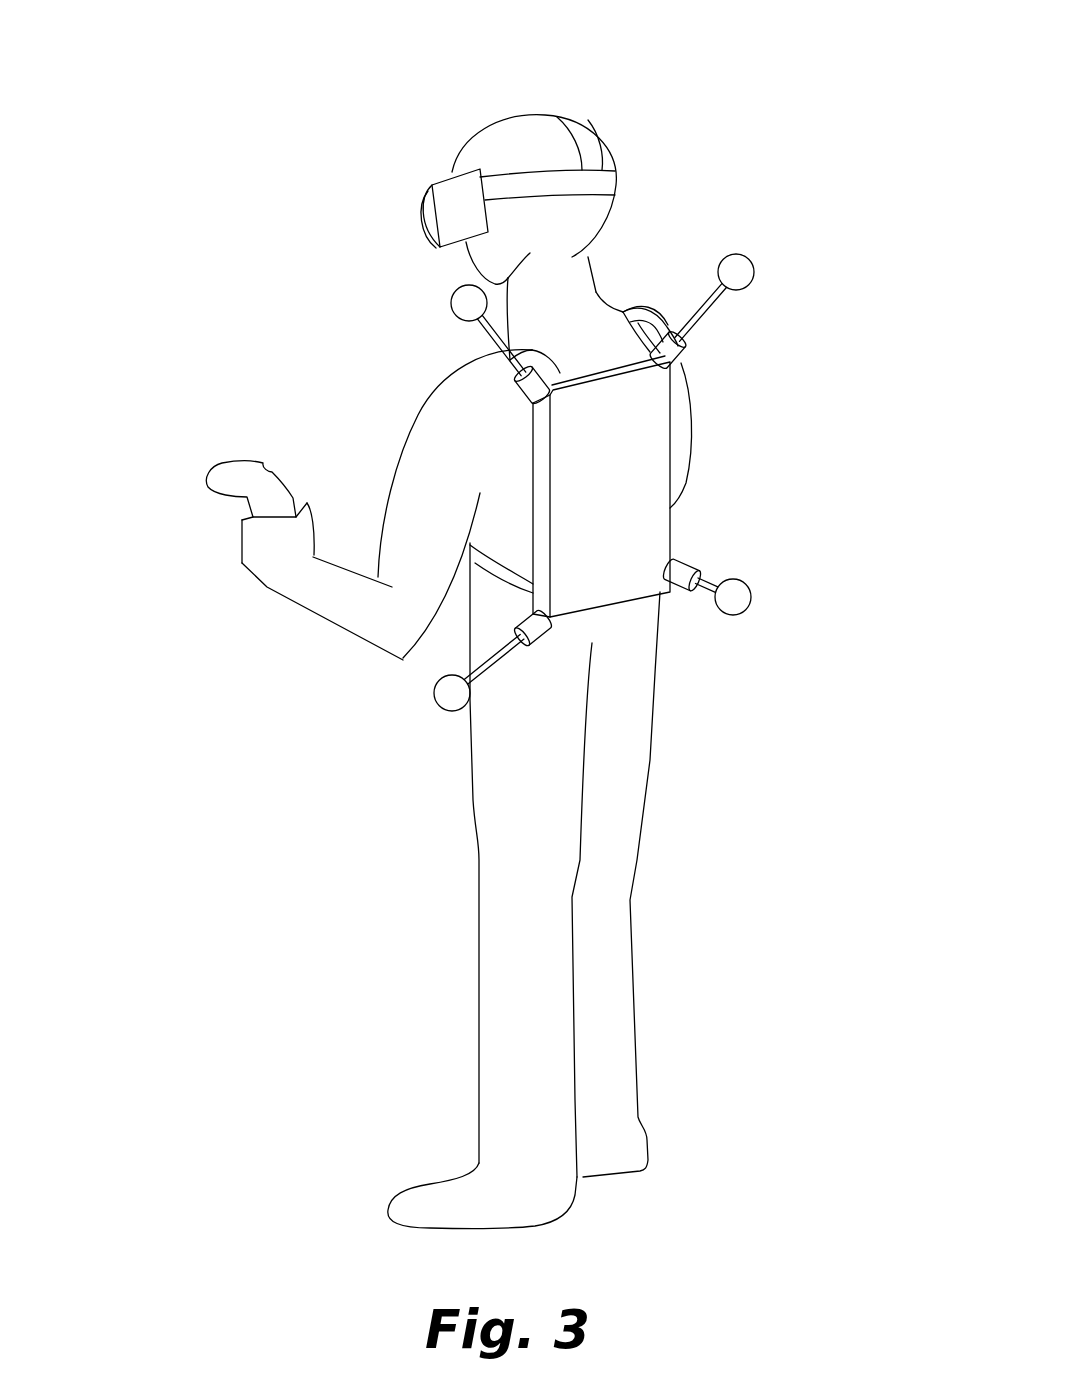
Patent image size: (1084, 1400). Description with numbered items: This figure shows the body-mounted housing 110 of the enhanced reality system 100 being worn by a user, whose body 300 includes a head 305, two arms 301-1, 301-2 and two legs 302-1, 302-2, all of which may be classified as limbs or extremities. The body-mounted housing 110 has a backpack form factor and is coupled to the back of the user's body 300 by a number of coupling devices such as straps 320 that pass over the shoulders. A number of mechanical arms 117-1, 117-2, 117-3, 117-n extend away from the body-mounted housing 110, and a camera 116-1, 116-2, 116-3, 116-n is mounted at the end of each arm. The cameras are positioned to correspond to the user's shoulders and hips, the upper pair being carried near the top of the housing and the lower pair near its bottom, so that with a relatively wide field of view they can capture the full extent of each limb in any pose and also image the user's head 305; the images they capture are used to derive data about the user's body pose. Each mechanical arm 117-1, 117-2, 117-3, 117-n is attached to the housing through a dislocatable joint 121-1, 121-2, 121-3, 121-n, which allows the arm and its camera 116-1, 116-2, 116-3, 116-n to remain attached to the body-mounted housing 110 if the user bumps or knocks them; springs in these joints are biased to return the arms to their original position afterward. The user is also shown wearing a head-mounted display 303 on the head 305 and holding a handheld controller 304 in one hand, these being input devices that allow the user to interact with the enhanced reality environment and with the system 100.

The ER system 100 is at (625, 706).
The body-mounted housing 110 is at (533, 447).
The camera 116-1 is at (466, 302).
The camera 116-2 is at (737, 272).
The camera 116-3 is at (448, 696).
The camera 116-n is at (735, 600).
The mechanical arm 117-1 is at (495, 347).
The mechanical arm 117-2 is at (717, 297).
The mechanical arm 117-3 is at (473, 668).
The mechanical arm 117-n is at (710, 573).
The dislocatable joint 121-1 is at (527, 395).
The dislocatable joint 121-2 is at (685, 350).
The dislocatable joint 121-3 is at (537, 643).
The dislocatable joint 121-n is at (680, 598).
The body 300 is at (582, 330).
The arm 301-1 is at (397, 607).
The arm 301-2 is at (682, 385).
The leg 302-1 is at (517, 972).
The leg 302-2 is at (615, 948).
The HMD 303 is at (447, 207).
The handheld controller 304 is at (253, 480).
The head 305 is at (513, 143).
The strap 320 is at (670, 335).